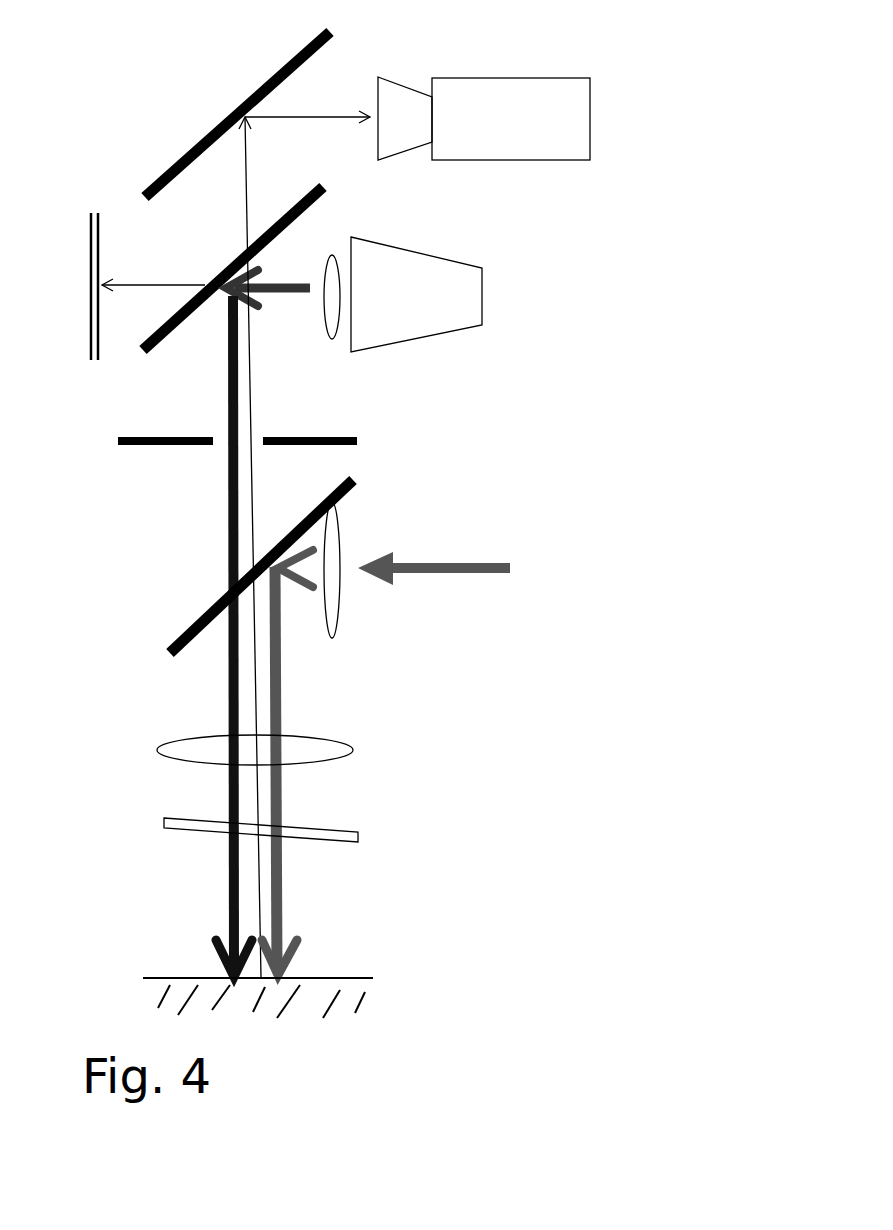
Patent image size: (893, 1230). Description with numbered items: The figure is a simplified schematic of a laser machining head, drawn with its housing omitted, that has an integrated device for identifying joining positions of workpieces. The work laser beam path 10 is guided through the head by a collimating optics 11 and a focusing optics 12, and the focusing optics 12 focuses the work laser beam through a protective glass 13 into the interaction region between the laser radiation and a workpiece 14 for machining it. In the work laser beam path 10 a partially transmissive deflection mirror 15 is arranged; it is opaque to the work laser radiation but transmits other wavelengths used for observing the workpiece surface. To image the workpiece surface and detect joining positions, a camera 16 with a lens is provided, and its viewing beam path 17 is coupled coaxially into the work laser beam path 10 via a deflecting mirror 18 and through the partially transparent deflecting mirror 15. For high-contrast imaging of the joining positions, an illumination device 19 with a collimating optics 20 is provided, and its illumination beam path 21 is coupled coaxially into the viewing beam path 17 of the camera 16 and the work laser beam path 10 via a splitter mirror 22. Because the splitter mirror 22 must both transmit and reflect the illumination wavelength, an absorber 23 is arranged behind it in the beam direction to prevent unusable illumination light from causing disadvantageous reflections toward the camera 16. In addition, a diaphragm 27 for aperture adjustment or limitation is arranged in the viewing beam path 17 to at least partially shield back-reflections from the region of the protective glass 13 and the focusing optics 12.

The work laser beam path 10 is at (281, 688).
The collimating optics 11 is at (330, 527).
The focusing optics 12 is at (355, 750).
The protective glass 13 is at (342, 833).
The workpiece 14 is at (343, 978).
The partially transmissive deflection mirror 15 is at (186, 636).
The camera 16 is at (528, 141).
The viewing beam path 17 is at (252, 520).
The deflecting mirror 18 is at (184, 160).
The illumination device 19 is at (452, 250).
The collimating optics 20 is at (333, 340).
The illumination beam path 21 is at (228, 392).
The splitter mirror 22 is at (327, 193).
The absorber 23 is at (87, 235).
The diaphragm 27 is at (118, 432).